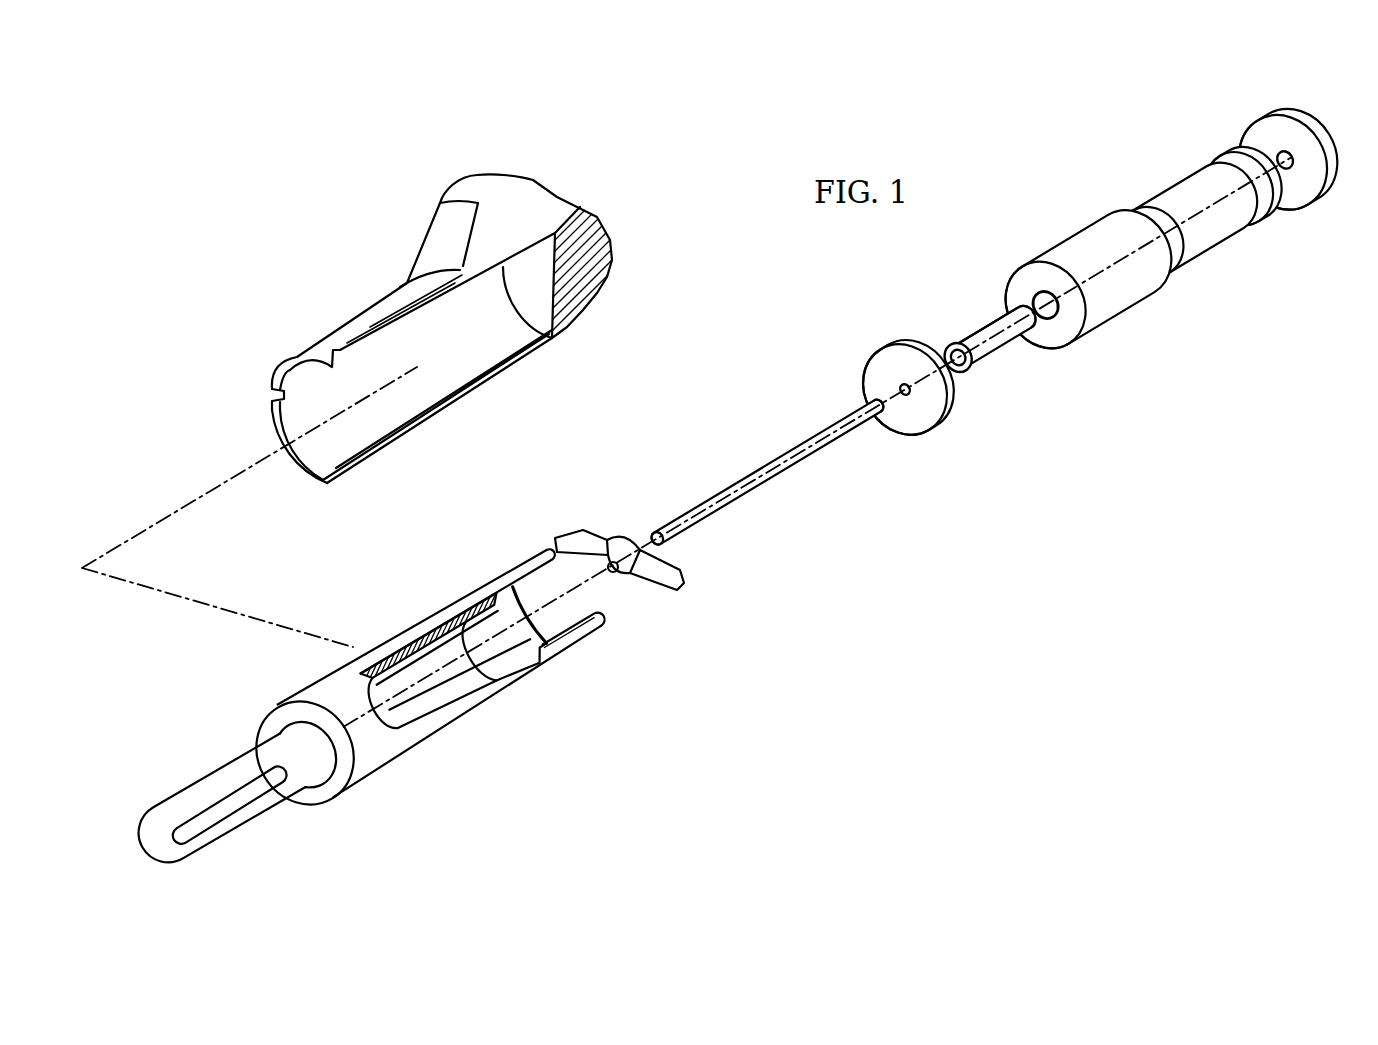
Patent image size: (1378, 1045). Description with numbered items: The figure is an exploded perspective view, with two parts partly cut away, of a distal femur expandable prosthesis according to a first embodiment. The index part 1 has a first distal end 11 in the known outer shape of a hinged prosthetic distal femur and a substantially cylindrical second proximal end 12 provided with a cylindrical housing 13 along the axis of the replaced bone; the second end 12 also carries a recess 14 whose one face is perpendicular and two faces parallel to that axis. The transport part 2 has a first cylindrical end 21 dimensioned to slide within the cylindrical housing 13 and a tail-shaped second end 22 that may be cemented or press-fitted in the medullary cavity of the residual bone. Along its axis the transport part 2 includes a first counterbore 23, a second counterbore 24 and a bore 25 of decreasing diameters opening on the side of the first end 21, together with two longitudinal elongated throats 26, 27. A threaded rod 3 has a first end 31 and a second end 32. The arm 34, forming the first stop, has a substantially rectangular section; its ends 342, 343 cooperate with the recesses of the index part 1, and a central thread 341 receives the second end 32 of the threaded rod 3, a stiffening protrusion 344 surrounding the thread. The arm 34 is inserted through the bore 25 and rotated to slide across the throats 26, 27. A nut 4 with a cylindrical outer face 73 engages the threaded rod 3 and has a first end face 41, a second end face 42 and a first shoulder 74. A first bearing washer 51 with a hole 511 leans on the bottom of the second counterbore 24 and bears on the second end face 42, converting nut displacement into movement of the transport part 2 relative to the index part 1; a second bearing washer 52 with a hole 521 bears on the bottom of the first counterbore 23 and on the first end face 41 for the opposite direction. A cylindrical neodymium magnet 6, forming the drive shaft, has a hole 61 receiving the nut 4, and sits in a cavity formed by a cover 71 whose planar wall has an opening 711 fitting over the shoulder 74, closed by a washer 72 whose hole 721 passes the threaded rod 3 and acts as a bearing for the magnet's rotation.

The index part 1 is at (375, 302).
The first distal end 11 is at (604, 258).
The second proximal end 12 is at (297, 459).
The cylindrical housing 13 is at (433, 383).
The recess 14 is at (287, 396).
The transport part 2 is at (302, 684).
The first cylindrical end 21 is at (573, 639).
The second end 22 is at (203, 788).
The first counterbore 23 is at (518, 605).
The second counterbore 24 is at (488, 621).
The bore 25 is at (416, 695).
The longitudinal elongated throat 26 is at (493, 678).
The longitudinal elongated throat 27 is at (416, 658).
The threaded rod 3 is at (776, 481).
The first end 31 is at (873, 403).
The second end 32 is at (663, 531).
The arm 34 is at (657, 593).
The thread 341 is at (614, 570).
The end of the arm 342 is at (611, 506).
The end of the arm 343 is at (681, 578).
The stiffening protrusion 344 is at (626, 546).
The nut 4 is at (983, 360).
The first end face 41 is at (1024, 323).
The second end face 42 is at (961, 361).
The first bearing washer 51 is at (890, 340).
The hole 511 is at (904, 394).
The second bearing washer 52 is at (1247, 123).
The hole 521 is at (1290, 170).
The magnet 6 is at (1213, 253).
The hole 61 is at (1157, 245).
The cover 71 is at (1058, 238).
The opening 711 is at (1034, 293).
The washer 72 is at (1218, 152).
The hole 721 is at (1248, 192).
The outer face 73 is at (989, 330).
The first shoulder 74 is at (953, 342).